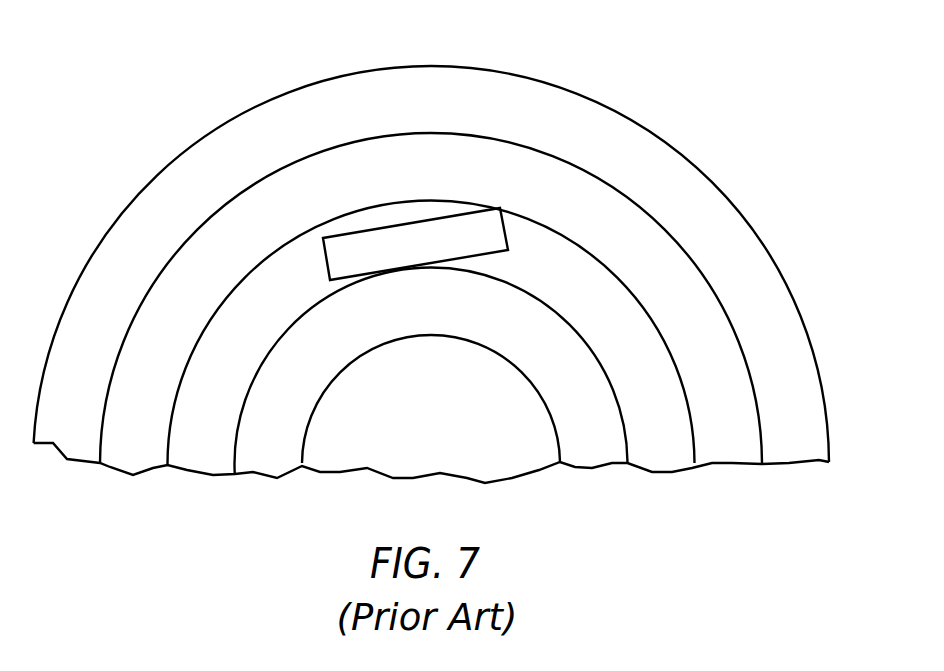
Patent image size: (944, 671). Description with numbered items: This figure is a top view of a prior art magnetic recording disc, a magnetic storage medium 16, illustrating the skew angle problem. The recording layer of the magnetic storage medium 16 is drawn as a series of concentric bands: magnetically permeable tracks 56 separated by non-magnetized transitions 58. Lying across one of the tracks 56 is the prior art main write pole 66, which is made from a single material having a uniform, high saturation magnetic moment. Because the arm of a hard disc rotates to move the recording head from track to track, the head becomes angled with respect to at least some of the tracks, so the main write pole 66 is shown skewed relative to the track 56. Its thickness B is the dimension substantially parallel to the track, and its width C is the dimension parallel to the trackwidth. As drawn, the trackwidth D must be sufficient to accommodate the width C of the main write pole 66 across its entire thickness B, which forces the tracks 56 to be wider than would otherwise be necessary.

The magnetic storage medium 16 is at (627, 87).
The magnetically permeable tracks 56 is at (656, 385).
The non-magnetized transitions 58 is at (722, 369).
The main write pole 66 is at (408, 256).
The thickness B is at (265, 272).
The width C is at (485, 290).
The trackwidth D is at (620, 293).